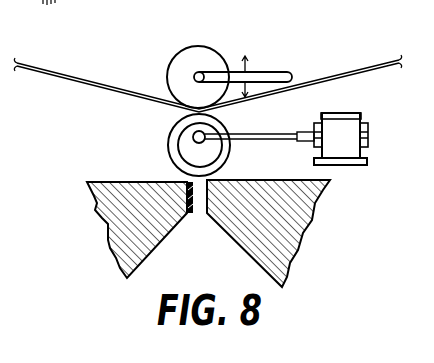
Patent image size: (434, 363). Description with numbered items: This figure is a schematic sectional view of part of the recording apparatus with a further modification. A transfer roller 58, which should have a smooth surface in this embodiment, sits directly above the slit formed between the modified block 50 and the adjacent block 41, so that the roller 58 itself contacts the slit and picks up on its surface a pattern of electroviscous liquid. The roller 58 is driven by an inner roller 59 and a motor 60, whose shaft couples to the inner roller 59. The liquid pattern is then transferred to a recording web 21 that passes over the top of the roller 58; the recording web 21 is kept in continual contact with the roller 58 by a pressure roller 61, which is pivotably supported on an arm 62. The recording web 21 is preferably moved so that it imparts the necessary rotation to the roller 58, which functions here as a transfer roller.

The recording web 21 is at (79, 83).
The block 41 is at (250, 181).
The modified block 50 is at (110, 175).
The transfer roller 58 is at (172, 131).
The inner roller 59 is at (183, 149).
The motor 60 is at (352, 113).
The pressure roller 61 is at (172, 60).
The arm 62 is at (270, 73).